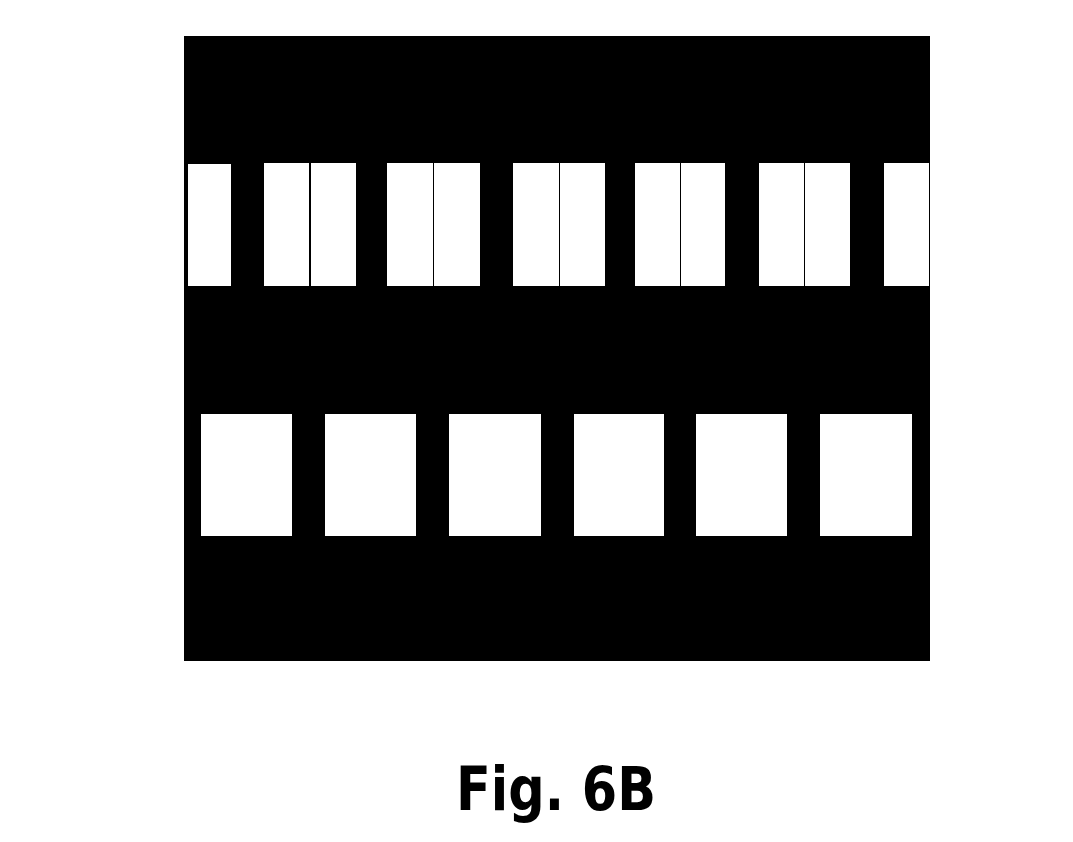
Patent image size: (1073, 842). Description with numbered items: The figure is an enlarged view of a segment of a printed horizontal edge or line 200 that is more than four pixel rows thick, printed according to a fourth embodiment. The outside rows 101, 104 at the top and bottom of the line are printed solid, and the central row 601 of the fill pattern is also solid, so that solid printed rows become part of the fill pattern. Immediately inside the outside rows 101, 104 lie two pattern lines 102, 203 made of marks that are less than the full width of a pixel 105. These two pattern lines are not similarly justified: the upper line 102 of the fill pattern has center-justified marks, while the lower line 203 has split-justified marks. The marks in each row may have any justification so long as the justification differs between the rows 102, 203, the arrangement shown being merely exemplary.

The outside row 101 is at (934, 93).
The upper line of the fill pattern 102 is at (934, 217).
The pixel 105 is at (176, 213).
The central row 601 is at (934, 342).
The lower line of the fill pattern 203 is at (934, 471).
The outside row 104 is at (934, 593).
The horizontal edge or line segment 200 is at (564, 403).